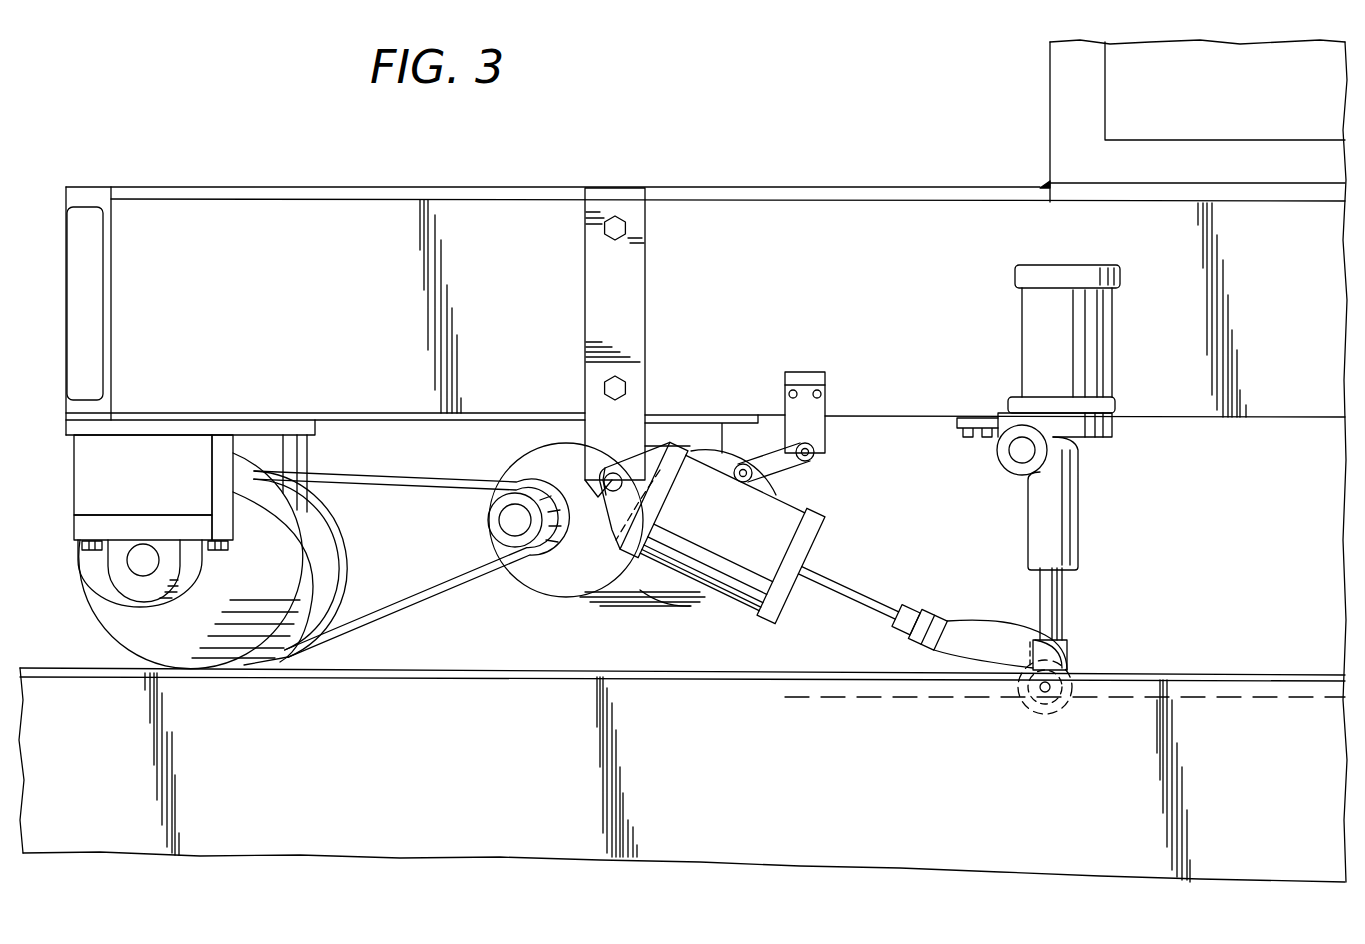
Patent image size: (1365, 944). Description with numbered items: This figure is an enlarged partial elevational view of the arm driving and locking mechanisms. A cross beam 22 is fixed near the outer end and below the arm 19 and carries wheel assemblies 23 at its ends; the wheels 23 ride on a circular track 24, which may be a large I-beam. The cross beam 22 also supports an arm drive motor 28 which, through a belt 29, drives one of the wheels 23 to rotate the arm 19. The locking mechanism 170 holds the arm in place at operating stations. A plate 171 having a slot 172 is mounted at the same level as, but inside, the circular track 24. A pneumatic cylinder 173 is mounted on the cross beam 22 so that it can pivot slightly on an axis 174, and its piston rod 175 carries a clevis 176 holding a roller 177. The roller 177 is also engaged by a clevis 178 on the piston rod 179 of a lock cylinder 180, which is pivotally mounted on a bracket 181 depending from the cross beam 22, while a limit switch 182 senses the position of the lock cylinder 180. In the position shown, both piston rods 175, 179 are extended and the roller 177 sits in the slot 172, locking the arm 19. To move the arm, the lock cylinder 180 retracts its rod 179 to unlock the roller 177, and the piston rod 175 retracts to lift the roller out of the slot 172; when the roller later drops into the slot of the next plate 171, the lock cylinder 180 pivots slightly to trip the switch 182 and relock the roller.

The arm 19 is at (1062, 86).
The cross beam 22 is at (825, 188).
The wheel assemblies 23 is at (64, 537).
The circular track 24 is at (460, 668).
The arm drive motor 28 is at (620, 587).
The belt 29 is at (438, 582).
The locking mechanism 170 is at (1082, 616).
The plate 171 is at (1135, 683).
The slot 172 is at (1068, 702).
The pneumatic cylinder 173 is at (1032, 335).
The axis 174 is at (1022, 450).
The piston rod 175 is at (1065, 592).
The clevis 176 is at (1070, 643).
The roller 177 is at (1047, 718).
The clevis 178 is at (940, 657).
The piston rod 179 is at (843, 582).
The lock cylinder 180 is at (777, 510).
The bracket 181 is at (633, 277).
The limit switch 182 is at (820, 430).